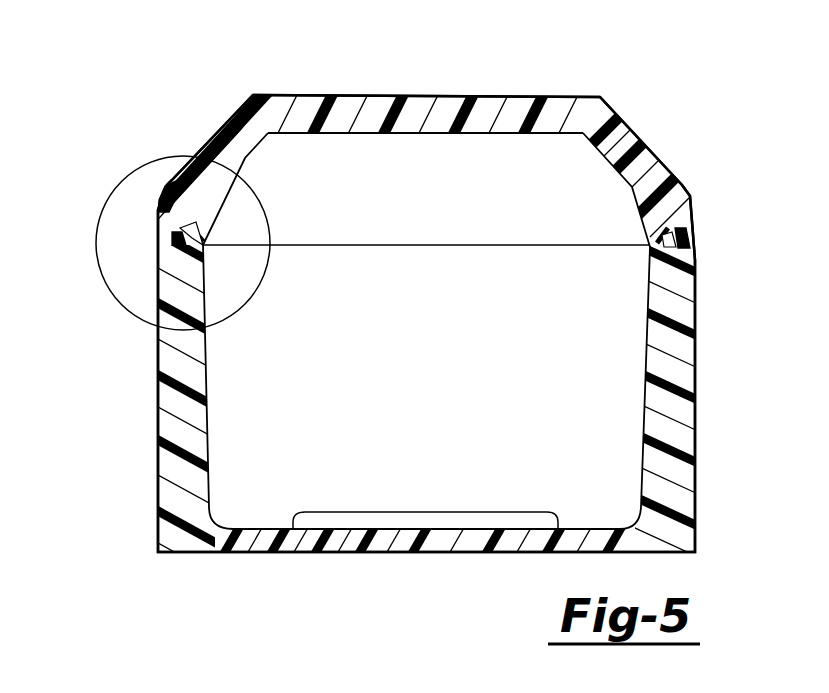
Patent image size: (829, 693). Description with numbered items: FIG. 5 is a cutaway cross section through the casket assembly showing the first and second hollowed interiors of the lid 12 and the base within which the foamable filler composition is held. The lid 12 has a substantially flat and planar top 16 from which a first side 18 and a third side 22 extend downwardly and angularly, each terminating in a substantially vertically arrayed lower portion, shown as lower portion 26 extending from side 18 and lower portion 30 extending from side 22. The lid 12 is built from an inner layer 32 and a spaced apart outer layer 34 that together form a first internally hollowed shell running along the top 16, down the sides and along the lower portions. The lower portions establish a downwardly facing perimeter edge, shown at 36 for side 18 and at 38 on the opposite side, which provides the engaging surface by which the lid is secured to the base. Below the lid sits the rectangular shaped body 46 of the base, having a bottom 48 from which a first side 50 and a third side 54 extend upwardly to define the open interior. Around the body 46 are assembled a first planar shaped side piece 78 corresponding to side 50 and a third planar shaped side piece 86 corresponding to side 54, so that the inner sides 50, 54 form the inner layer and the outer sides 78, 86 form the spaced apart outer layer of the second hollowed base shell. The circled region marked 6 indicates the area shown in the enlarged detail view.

The lid 12 is at (260, 60).
The top 16 is at (413, 95).
The first side 18 is at (206, 155).
The third side 22 is at (645, 158).
The lower portion 26 is at (157, 208).
The lower portion 30 is at (695, 212).
The inner layer 32 is at (540, 135).
The outer layer 34 is at (575, 96).
The downwardly facing perimeter edge 36 is at (170, 243).
The downwardly facing perimeter edge 38 is at (700, 243).
The rectangular shaped body 46 is at (587, 340).
The bottom 48 is at (487, 530).
The first side 50 is at (207, 468).
The third side 54 is at (643, 435).
The first planar shaped side piece 78 is at (158, 482).
The third planar shaped side piece 86 is at (697, 440).
The detail view circle (FIG. 6) 6 is at (97, 208).